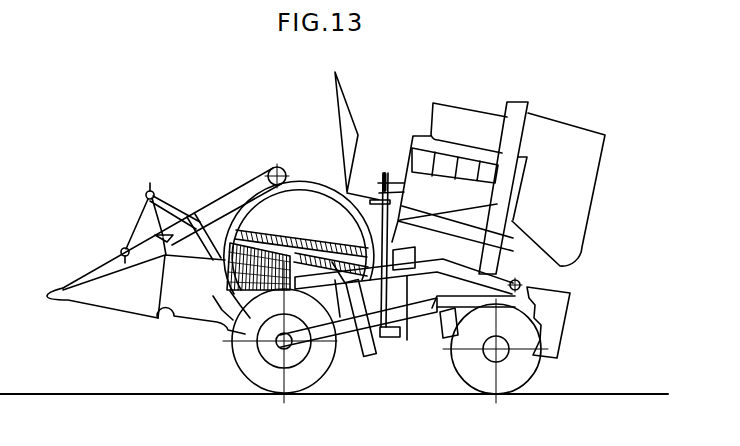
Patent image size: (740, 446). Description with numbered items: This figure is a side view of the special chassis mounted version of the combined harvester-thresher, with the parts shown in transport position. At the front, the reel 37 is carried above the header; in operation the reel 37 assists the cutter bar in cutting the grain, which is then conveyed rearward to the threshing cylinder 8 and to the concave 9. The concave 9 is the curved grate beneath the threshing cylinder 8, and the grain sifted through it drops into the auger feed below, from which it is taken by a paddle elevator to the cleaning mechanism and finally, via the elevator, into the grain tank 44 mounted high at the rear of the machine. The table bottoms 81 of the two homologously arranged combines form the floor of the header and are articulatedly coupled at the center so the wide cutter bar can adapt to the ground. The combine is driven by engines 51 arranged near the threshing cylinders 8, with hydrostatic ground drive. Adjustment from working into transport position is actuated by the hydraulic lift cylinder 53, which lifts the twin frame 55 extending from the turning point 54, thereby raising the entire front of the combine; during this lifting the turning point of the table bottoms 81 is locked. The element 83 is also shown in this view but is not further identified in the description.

The threshing cylinder 8 is at (322, 243).
The concave 9 is at (227, 276).
The reel 37 is at (139, 219).
The grain tank 44 is at (575, 227).
The engines 51 is at (422, 160).
The hydraulic lift cylinder 53 is at (367, 348).
The turning point 54 is at (522, 285).
The twin frame 55 is at (460, 270).
The table bottoms 81 is at (221, 325).
The deflector blade 83 is at (343, 110).